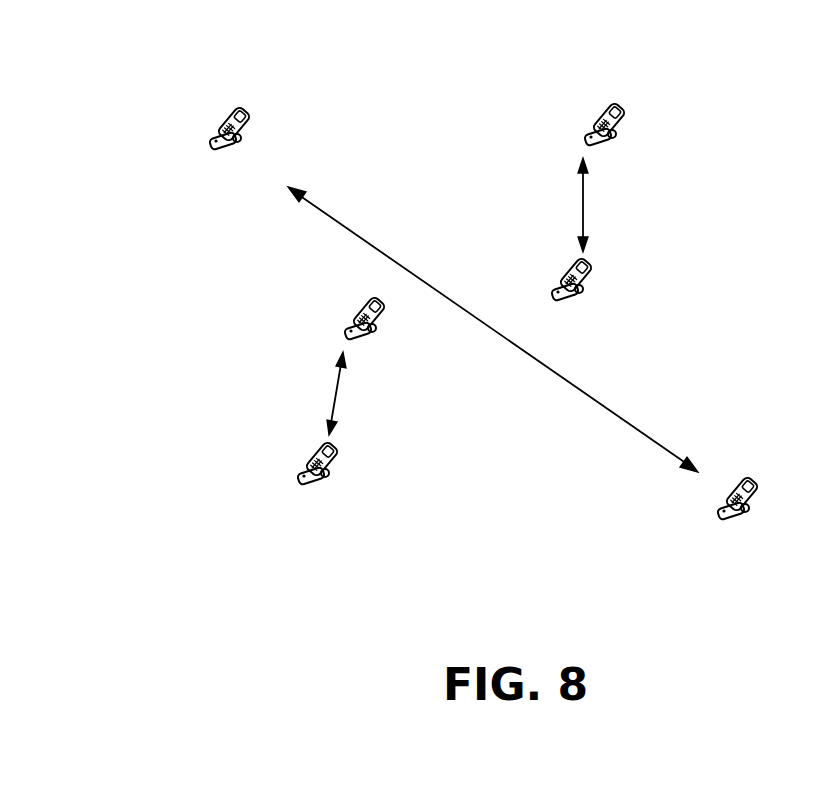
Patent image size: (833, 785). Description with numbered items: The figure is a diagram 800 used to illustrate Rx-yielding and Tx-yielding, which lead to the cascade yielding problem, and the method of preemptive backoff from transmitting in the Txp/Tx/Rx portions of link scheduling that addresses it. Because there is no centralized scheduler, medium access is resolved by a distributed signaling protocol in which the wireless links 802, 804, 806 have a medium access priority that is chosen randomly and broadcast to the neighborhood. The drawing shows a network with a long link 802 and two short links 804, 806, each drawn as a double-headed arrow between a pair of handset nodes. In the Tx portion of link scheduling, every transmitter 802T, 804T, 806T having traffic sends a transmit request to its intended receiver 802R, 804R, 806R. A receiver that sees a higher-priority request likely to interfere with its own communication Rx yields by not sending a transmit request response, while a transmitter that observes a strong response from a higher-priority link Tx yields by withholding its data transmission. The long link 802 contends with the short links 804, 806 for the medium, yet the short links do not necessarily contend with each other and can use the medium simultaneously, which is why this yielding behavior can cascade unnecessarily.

The diagram 800 is at (135, 50).
The long link 802 is at (493, 329).
The transmitter 802T is at (216, 152).
The receiver 802R is at (723, 521).
The short link 804 is at (612, 205).
The transmitter 804T is at (591, 148).
The receiver 804R is at (557, 303).
The short link 806 is at (316, 393).
The transmitter 806T is at (351, 341).
The receiver 806R is at (306, 487).